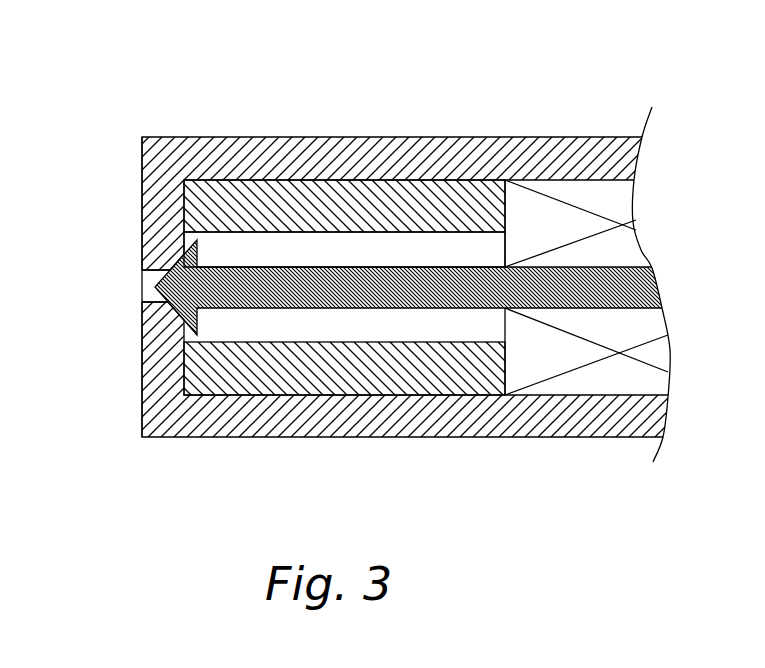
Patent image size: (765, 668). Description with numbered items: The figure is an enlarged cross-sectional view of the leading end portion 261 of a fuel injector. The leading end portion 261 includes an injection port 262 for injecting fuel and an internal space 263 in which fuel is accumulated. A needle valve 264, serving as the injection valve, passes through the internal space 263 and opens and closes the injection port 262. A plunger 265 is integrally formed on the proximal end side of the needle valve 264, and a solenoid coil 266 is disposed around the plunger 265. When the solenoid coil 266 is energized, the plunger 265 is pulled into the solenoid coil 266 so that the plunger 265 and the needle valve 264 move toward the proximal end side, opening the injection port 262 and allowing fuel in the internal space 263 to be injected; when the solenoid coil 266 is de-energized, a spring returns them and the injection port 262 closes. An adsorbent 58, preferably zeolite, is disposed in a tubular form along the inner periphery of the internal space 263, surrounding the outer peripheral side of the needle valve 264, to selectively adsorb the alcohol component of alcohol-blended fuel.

The leading end portion 261 is at (322, 150).
The adsorbent 58 is at (243, 203).
The internal space 263 is at (413, 253).
The needle valve 264 is at (220, 287).
The plunger 265 is at (567, 290).
The solenoid coil 266 is at (608, 200).
The injection port 262 is at (150, 291).